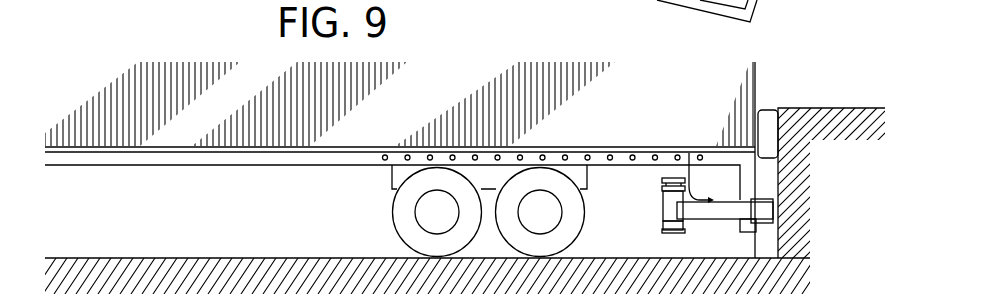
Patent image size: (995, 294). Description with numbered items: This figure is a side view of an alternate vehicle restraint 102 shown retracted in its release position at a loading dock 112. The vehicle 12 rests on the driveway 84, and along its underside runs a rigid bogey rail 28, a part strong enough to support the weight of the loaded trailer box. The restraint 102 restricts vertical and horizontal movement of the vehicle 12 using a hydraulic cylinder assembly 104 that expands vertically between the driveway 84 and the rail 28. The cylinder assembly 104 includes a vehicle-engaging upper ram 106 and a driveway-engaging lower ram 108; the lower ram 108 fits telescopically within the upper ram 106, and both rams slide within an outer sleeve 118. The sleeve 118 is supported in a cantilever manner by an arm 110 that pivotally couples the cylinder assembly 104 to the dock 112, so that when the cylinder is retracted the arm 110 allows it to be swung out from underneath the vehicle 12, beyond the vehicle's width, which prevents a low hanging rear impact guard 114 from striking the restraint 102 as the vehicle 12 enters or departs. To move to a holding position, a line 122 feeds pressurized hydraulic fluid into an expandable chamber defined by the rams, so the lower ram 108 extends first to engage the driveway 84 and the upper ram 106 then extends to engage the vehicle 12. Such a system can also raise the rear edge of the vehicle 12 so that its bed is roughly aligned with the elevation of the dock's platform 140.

The vehicle 12 is at (272, 167).
The rail 28 is at (313, 166).
The driveway 84 is at (218, 257).
The vehicle restraint 102 is at (645, 167).
The hydraulic cylinder assembly 104 is at (662, 224).
The upper ram 106 is at (661, 179).
The lower ram 108 is at (671, 233).
The arm 110 is at (727, 221).
The dock 112 is at (738, 191).
The rear impact guard 114 is at (757, 178).
The outer sleeve 118 is at (662, 210).
The line 122 is at (689, 151).
The platform 140 is at (837, 107).